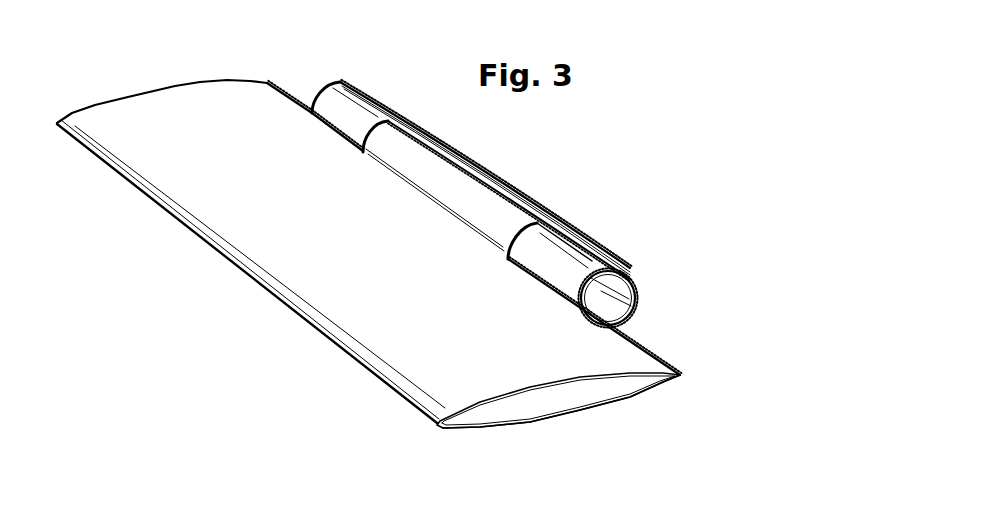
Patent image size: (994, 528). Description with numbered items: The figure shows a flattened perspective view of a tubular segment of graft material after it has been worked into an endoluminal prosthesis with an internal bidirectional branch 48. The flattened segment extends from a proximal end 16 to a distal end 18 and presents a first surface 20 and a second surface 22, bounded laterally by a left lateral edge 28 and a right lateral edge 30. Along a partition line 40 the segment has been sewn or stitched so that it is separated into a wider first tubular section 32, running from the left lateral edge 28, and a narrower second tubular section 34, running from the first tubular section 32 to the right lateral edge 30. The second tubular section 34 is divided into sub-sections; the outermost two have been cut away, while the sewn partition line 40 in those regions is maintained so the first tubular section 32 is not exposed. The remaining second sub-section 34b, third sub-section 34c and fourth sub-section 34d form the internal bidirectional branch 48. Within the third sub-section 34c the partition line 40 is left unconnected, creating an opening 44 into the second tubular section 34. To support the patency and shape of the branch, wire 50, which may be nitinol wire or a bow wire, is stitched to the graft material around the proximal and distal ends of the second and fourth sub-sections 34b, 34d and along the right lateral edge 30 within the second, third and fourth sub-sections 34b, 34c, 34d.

The proximal end 16 is at (369, 256).
The distal end 18 is at (525, 424).
The first surface 20 is at (210, 203).
The second surface 22 is at (613, 397).
The first or left lateral edge 28 is at (288, 311).
The second or right lateral edge 30 is at (489, 190).
The first tubular section 32 is at (412, 357).
The second tubular section 34 is at (614, 305).
The second sub-section 34b is at (339, 127).
The third sub-section 34c is at (407, 171).
The fourth sub-section 34d is at (533, 256).
The partition line 40 is at (286, 84).
The opening 44 is at (440, 207).
The internal bidirectional branch 48 is at (344, 102).
The wire 50 is at (313, 105).